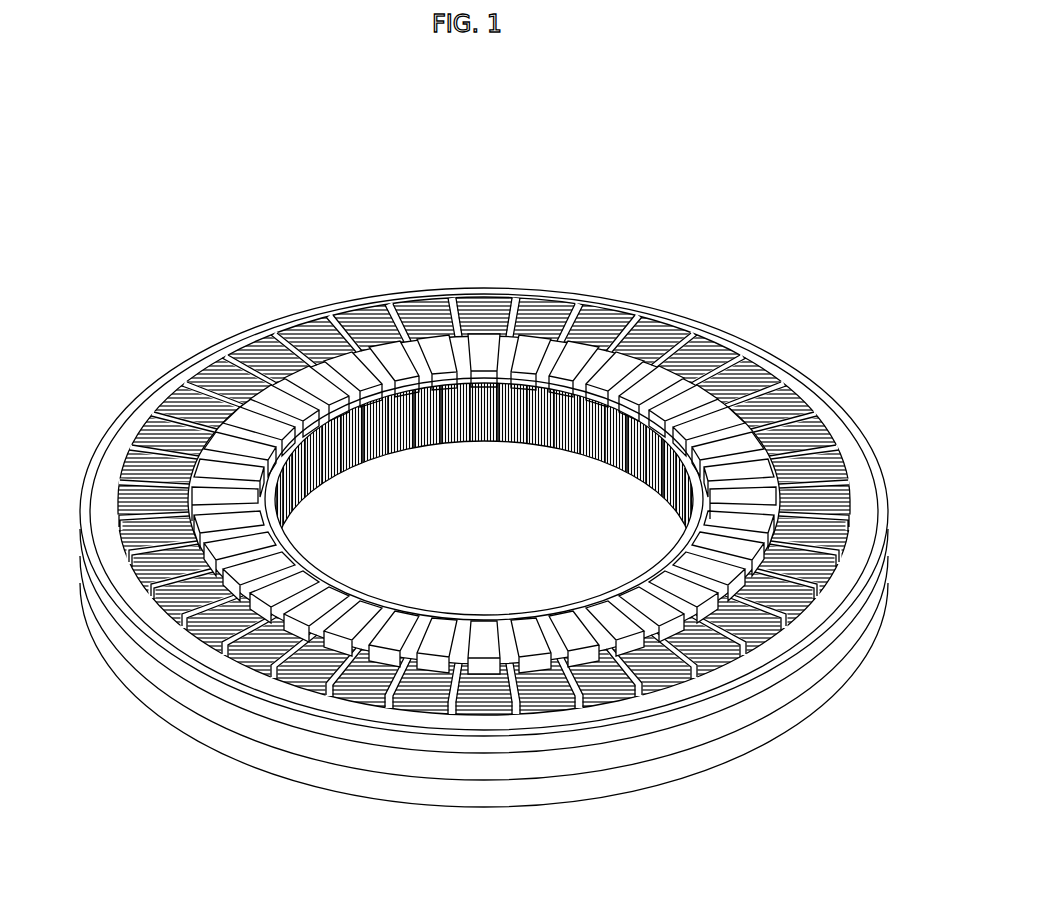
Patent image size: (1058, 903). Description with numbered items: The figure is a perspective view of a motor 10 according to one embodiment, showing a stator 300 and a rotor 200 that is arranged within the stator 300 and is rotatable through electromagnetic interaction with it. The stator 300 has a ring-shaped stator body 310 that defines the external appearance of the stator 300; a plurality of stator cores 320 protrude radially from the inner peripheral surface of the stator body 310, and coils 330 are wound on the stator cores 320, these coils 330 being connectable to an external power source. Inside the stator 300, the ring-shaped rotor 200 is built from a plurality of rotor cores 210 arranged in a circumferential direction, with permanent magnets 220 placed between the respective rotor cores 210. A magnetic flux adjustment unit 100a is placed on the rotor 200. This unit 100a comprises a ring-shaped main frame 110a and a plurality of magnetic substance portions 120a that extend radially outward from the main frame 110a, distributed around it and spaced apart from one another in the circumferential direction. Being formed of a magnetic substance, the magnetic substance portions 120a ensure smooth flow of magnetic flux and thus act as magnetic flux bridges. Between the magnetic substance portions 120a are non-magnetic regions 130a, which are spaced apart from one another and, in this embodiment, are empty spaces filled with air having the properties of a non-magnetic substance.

The motor 10 is at (390, 137).
The magnetic flux adjustment unit 100a is at (440, 542).
The main frame 110a is at (427, 625).
The magnetic substance portions 120a is at (462, 640).
The non-magnetic regions 130a is at (552, 625).
The rotor 200 is at (562, 214).
The rotor cores 210 is at (556, 358).
The permanent magnets 220 is at (614, 368).
The stator 300 is at (705, 315).
The stator body 310 is at (822, 413).
The stator cores 320 is at (728, 386).
The coils 330 is at (770, 388).